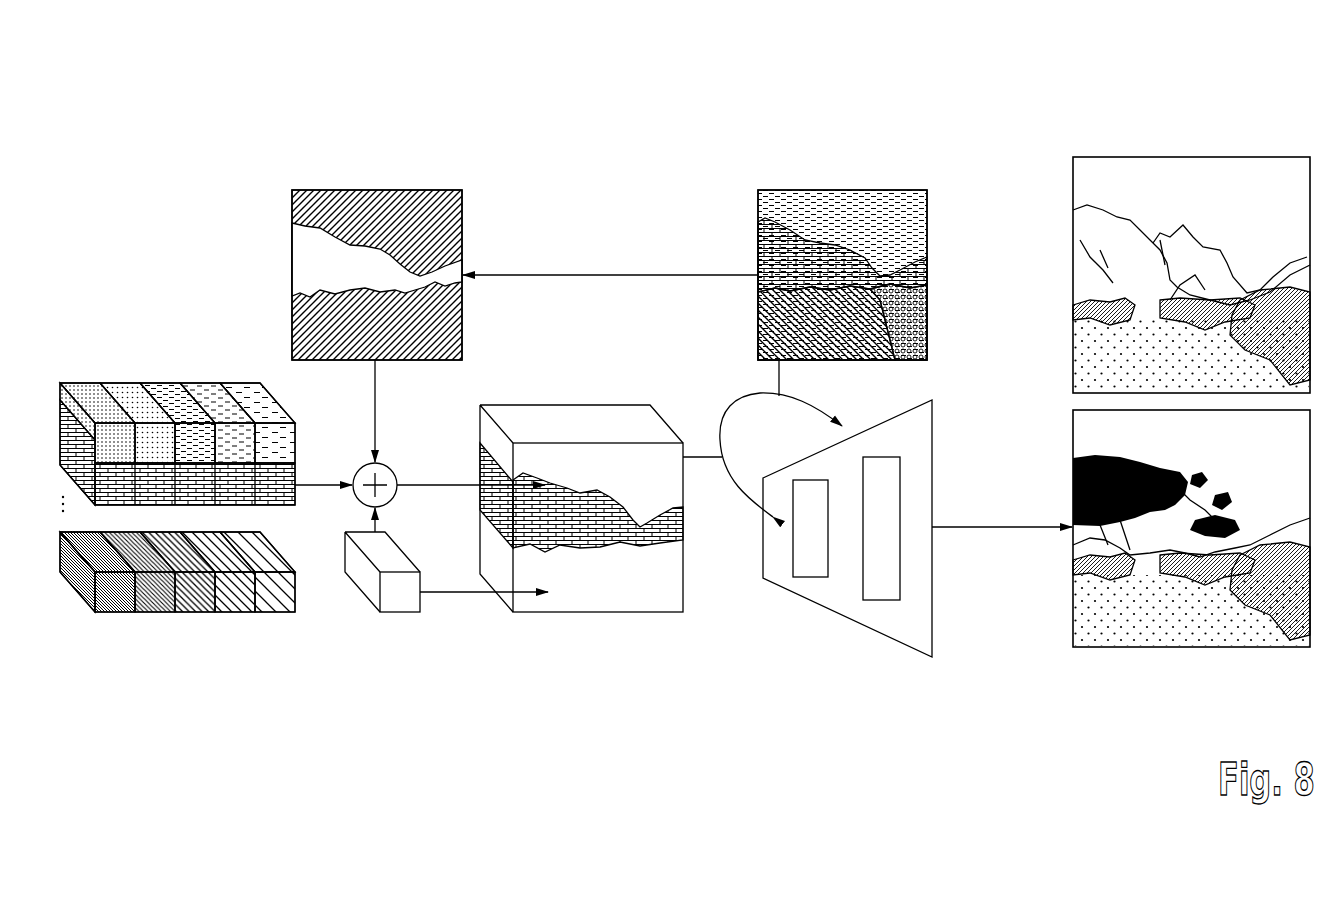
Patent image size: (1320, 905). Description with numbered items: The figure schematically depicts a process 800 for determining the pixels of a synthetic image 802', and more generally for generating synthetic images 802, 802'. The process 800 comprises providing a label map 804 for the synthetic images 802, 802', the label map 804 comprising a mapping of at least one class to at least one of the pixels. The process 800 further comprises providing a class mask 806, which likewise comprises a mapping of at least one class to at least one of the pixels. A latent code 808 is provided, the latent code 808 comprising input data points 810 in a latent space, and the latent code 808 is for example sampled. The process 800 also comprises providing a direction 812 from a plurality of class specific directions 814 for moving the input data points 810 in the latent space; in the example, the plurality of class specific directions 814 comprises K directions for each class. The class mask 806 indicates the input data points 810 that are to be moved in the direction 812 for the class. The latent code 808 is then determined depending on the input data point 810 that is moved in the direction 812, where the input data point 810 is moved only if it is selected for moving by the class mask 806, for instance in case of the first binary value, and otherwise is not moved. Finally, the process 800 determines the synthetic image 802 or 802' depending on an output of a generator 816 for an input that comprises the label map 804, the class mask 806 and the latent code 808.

The process 800 is at (607, 130).
The synthetic image 802 is at (1191, 275).
The synthetic image 802' is at (1191, 562).
The label map 804 is at (842, 190).
The class mask 806 is at (375, 190).
The latent code 808 is at (600, 612).
The input data points 810 is at (402, 604).
The direction 812 is at (197, 495).
The class specific directions 814 is at (173, 628).
The generator 816 is at (833, 600).